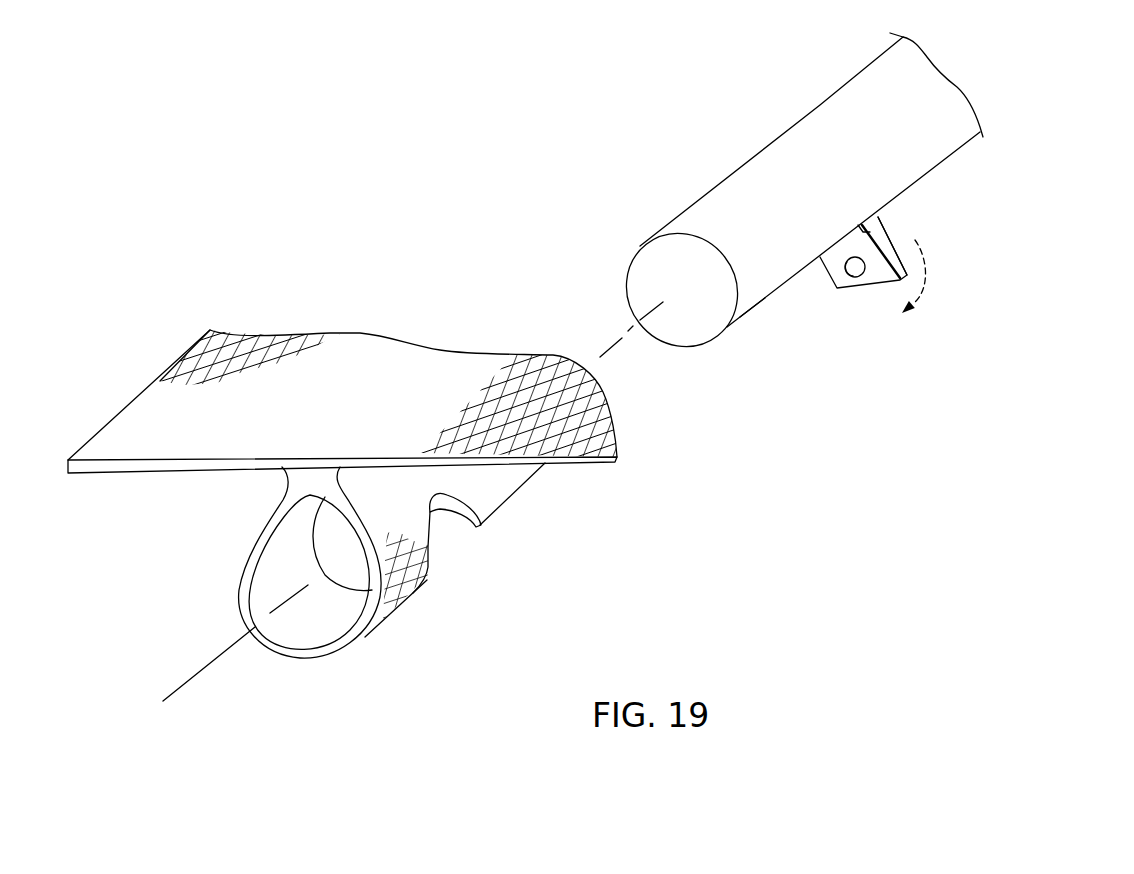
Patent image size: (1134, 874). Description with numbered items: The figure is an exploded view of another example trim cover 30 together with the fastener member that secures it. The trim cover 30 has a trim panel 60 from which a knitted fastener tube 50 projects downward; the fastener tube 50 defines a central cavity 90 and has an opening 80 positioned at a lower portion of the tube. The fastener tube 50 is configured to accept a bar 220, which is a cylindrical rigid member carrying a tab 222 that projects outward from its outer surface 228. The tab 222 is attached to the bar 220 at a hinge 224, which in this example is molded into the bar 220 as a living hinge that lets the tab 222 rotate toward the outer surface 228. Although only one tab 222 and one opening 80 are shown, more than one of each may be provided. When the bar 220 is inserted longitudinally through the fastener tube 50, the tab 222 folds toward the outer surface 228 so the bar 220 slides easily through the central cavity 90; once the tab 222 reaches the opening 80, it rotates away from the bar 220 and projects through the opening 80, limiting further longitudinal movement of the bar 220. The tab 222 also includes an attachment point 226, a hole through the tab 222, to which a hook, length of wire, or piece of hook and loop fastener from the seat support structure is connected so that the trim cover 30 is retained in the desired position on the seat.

The trim cover 30 is at (635, 542).
The fastener tube 50 is at (410, 585).
The trim panel 60 is at (362, 350).
The opening 80 is at (445, 538).
The central cavity 90 is at (318, 610).
The bar 220 is at (753, 188).
The tab 222 is at (872, 287).
The hinge 224 is at (878, 217).
The attachment point 226 is at (853, 268).
The outer surface 228 is at (752, 311).